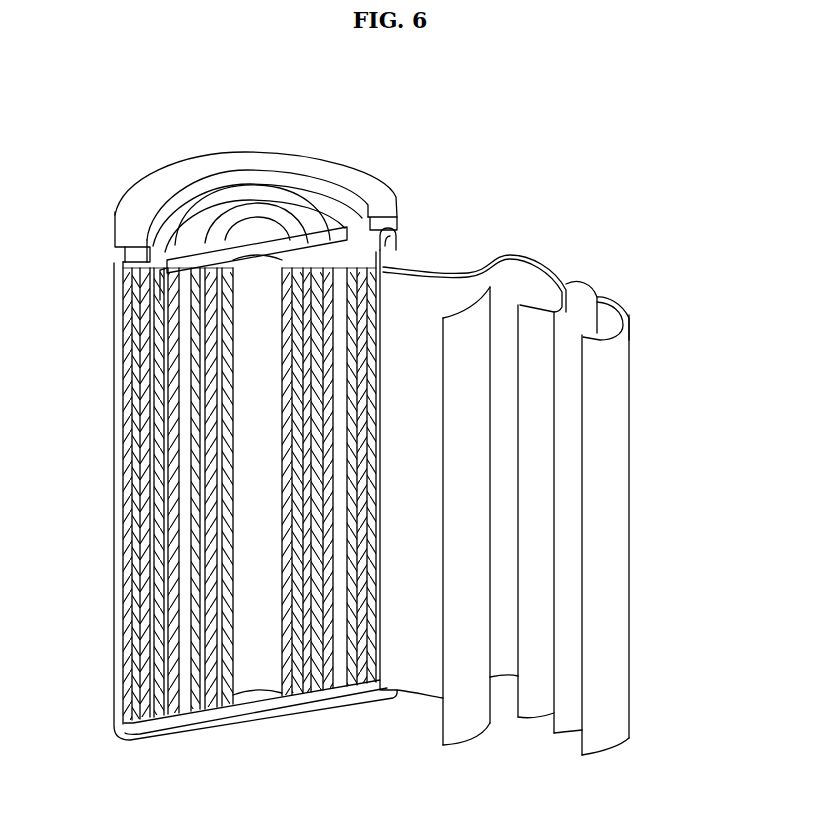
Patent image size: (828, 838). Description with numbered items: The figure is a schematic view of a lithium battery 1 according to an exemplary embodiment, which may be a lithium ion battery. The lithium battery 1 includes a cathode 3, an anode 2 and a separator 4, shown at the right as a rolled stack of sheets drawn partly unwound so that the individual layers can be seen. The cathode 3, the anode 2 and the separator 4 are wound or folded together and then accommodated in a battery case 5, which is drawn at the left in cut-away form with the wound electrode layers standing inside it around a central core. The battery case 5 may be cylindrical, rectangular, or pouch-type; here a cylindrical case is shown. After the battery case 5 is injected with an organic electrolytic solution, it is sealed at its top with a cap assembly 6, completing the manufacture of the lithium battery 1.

The lithium battery 1 is at (600, 238).
The anode 2 is at (620, 400).
The cathode 3 is at (535, 312).
The separator 4 is at (470, 740).
The battery case 5 is at (116, 672).
The cap assembly 6 is at (268, 190).